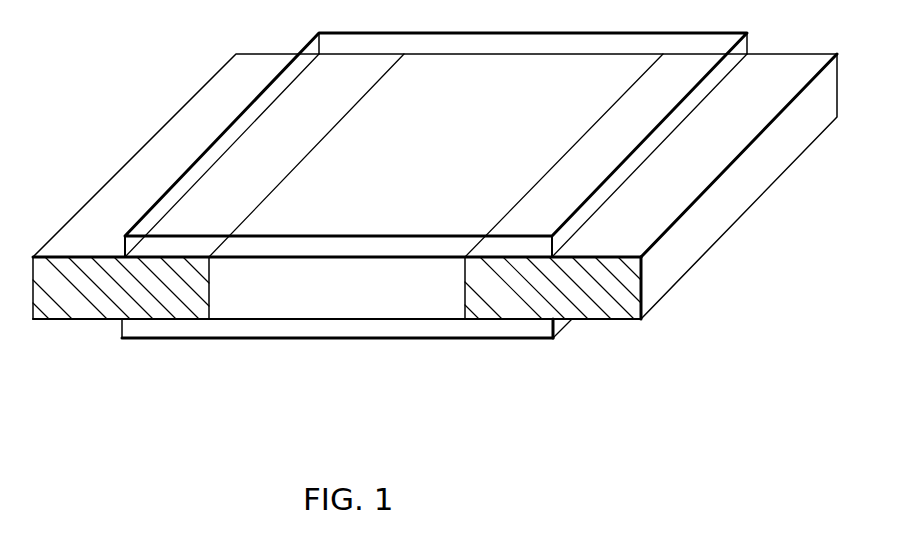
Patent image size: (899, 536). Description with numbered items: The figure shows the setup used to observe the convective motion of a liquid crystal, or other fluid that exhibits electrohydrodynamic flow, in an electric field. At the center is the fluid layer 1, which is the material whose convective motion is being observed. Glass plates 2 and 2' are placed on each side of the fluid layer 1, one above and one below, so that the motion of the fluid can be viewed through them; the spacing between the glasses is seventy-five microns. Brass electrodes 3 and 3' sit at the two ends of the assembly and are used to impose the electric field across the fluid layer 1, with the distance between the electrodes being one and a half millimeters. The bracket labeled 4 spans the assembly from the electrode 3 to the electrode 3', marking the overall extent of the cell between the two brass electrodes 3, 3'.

The fluid layer 1 is at (352, 309).
The glass plate 2 is at (436, 145).
The glass plate 2' is at (347, 355).
The brass electrode 3 is at (435, 186).
The brass electrode 3' is at (651, 186).
The laminated assembly 4 is at (610, 302).